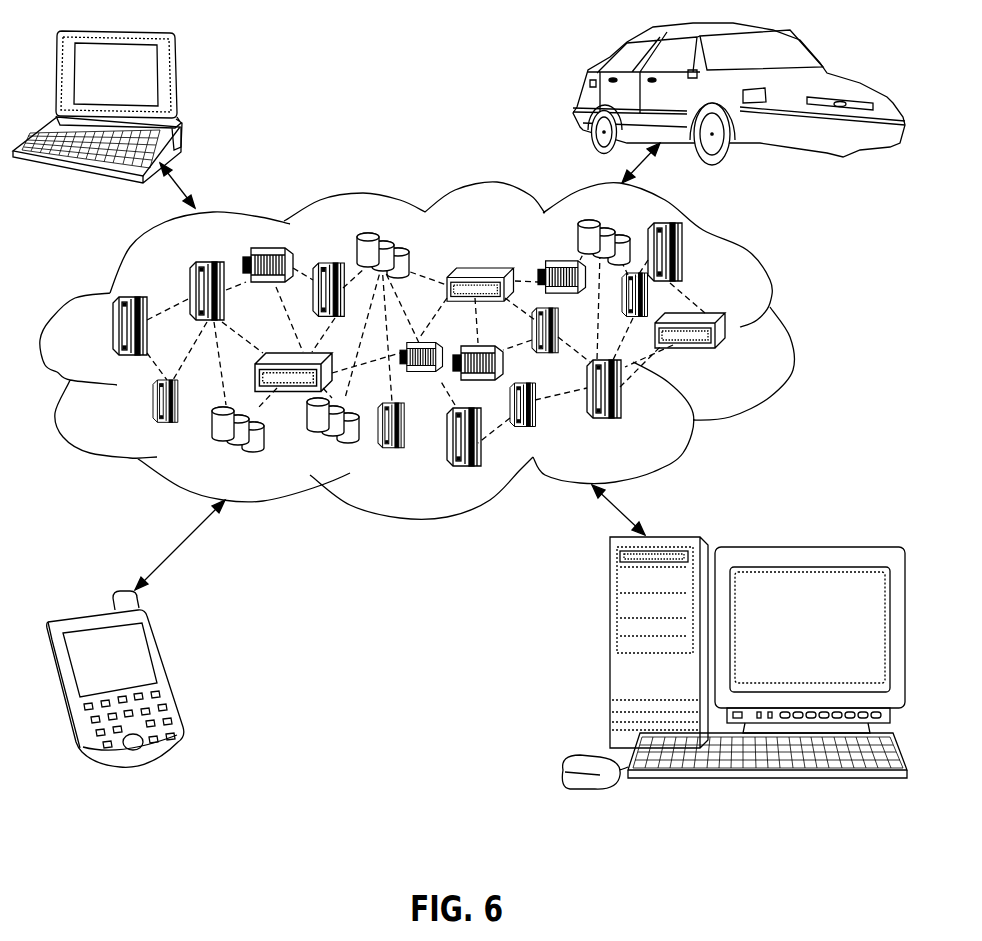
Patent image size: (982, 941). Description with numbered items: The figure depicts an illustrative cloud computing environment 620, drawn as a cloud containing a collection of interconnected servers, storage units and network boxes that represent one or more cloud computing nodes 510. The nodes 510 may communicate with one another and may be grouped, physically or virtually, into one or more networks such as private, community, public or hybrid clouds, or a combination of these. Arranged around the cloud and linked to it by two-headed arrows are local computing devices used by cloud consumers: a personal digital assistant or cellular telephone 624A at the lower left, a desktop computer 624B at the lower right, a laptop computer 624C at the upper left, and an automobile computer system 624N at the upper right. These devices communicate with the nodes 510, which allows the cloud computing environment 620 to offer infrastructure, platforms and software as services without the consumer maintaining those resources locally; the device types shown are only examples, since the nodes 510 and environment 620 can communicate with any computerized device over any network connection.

The cloud computing nodes 510 is at (772, 292).
The cloud computing environment 620 is at (747, 350).
The personal digital assistant (PDA) or cellular telephone 624A is at (163, 667).
The desktop computer 624B is at (607, 650).
The laptop computer 624C is at (177, 80).
The automobile computer system 624N is at (583, 87).